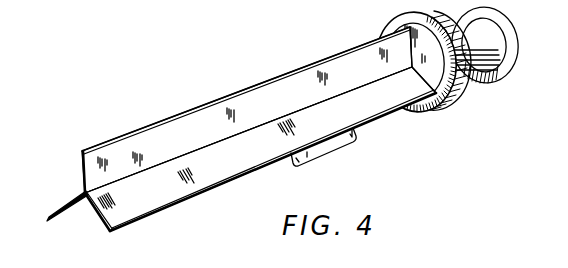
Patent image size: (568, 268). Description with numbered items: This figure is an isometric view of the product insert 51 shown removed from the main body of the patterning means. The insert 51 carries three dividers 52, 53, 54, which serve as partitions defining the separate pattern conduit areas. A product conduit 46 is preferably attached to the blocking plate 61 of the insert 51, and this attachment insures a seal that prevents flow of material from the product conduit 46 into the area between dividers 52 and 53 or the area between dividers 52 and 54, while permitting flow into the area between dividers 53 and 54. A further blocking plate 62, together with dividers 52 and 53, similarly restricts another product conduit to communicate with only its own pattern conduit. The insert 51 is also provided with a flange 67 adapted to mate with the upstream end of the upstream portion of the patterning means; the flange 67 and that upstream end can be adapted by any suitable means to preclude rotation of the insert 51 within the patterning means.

The product conduit 46 is at (466, 90).
The product insert 51 is at (288, 58).
The divider 52 is at (196, 150).
The divider 53 is at (247, 169).
The divider 54 is at (56, 212).
The blocking plate 61 is at (433, 72).
The blocking plate 62 is at (338, 143).
The flange 67 is at (441, 108).